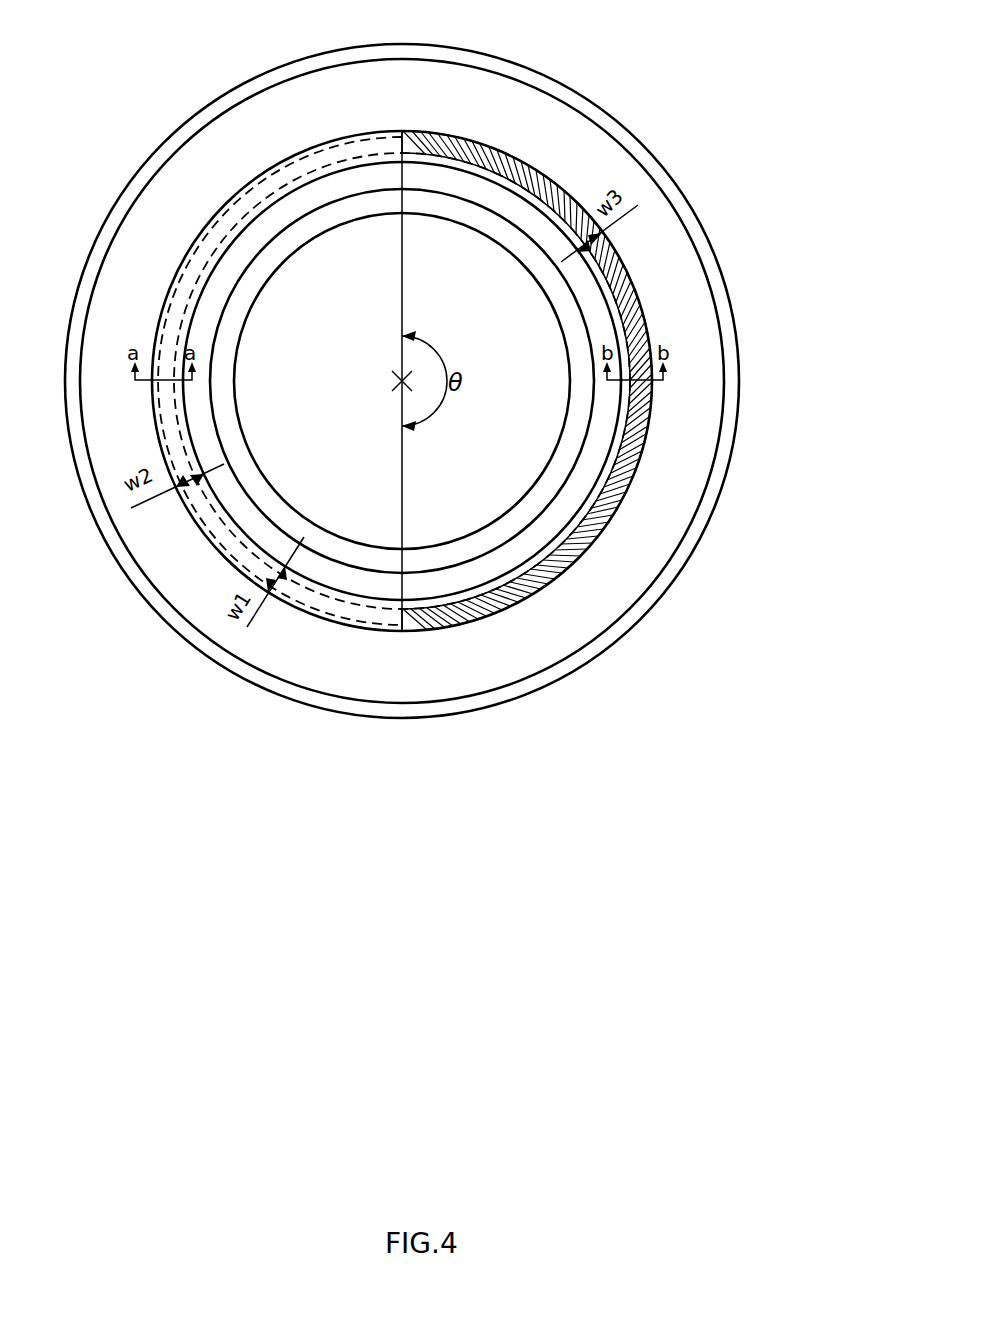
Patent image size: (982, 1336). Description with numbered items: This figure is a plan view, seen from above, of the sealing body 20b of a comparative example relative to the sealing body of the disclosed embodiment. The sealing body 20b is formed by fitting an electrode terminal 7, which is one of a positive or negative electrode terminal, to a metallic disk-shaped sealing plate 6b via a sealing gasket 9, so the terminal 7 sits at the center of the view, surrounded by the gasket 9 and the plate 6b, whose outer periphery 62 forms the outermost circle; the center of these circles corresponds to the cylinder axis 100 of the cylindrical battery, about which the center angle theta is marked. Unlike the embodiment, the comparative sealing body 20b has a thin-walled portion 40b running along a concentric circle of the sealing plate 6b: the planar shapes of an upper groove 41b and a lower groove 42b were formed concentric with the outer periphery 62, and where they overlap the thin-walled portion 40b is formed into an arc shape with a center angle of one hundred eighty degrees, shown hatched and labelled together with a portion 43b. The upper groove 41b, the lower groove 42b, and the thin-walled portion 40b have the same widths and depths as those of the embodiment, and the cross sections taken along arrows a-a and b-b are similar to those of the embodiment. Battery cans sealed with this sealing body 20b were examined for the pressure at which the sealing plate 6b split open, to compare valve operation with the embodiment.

The sealing body 20b is at (684, 75).
The outer periphery 62 is at (724, 244).
The sealing plate 6b is at (650, 552).
The sealing gasket 9 is at (293, 242).
The electrode terminal 7 is at (490, 482).
The lower groove 42b is at (205, 545).
The upper groove 41b is at (372, 633).
The thin-walled portion 40b is at (527, 462).
The thin portion 43b is at (473, 627).
The cylinder axis 100 is at (394, 381).